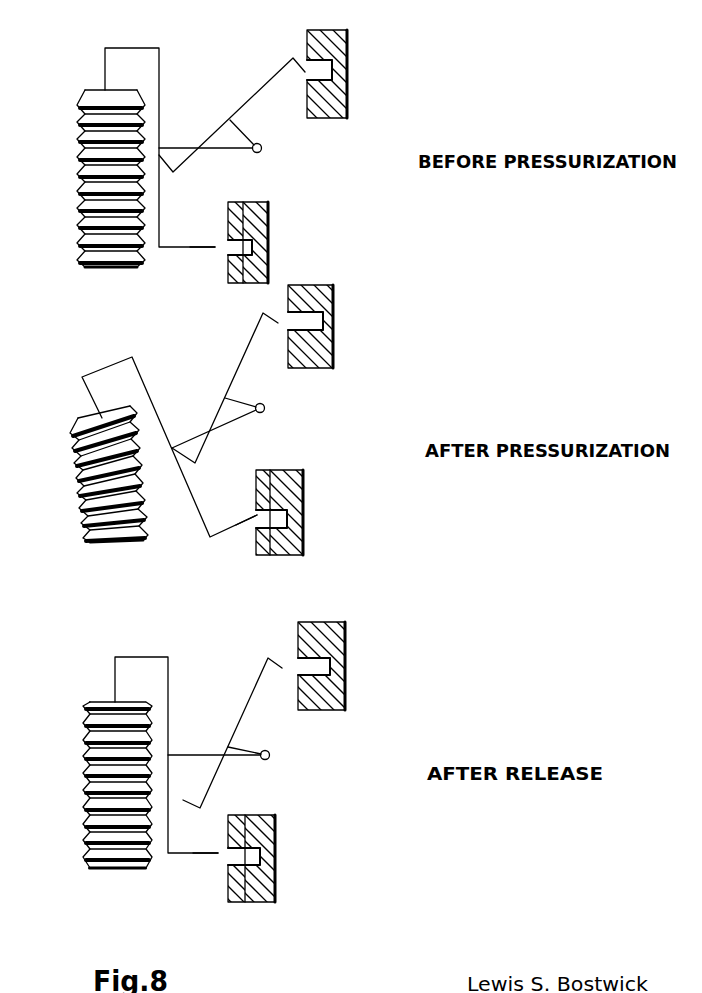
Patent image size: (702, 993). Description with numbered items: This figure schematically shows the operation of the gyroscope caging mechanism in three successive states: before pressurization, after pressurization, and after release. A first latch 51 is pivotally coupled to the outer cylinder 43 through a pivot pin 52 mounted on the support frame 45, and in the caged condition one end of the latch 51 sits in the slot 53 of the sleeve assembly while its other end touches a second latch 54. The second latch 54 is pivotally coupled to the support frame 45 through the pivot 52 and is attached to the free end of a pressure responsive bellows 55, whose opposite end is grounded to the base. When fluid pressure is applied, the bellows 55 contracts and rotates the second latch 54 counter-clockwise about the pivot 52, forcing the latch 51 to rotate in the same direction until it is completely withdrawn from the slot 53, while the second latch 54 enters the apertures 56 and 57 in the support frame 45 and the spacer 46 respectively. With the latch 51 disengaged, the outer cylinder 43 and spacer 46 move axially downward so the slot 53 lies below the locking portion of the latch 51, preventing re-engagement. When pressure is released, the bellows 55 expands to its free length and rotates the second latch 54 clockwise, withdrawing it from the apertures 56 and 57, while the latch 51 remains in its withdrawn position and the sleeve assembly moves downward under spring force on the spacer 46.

The outer cylinder 43 is at (348, 35).
The support frame 45 is at (228, 228).
The spacer 46 is at (260, 207).
The latch 51 is at (268, 78).
The pivot pin 52 is at (263, 148).
The slot 53 is at (328, 72).
The second latch 54 is at (160, 58).
The pressure responsive bellows 55 is at (87, 195).
The aperture in support frame 56 is at (230, 248).
The aperture in spacer 57 is at (252, 243).